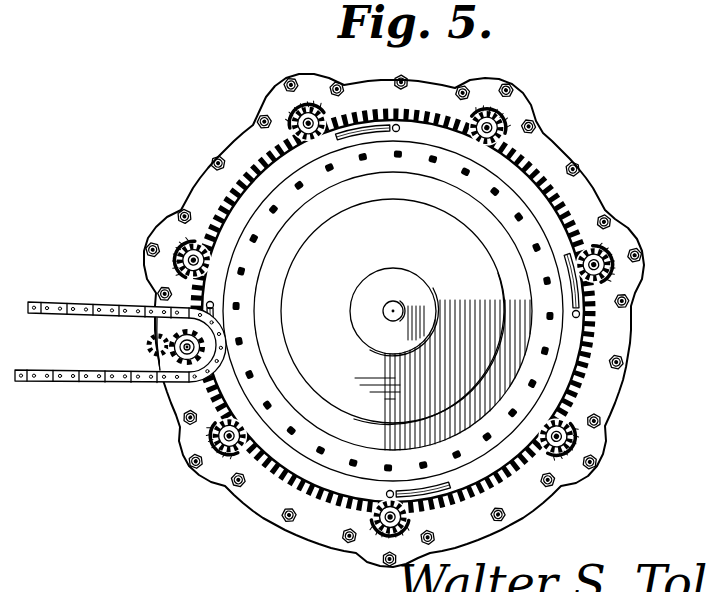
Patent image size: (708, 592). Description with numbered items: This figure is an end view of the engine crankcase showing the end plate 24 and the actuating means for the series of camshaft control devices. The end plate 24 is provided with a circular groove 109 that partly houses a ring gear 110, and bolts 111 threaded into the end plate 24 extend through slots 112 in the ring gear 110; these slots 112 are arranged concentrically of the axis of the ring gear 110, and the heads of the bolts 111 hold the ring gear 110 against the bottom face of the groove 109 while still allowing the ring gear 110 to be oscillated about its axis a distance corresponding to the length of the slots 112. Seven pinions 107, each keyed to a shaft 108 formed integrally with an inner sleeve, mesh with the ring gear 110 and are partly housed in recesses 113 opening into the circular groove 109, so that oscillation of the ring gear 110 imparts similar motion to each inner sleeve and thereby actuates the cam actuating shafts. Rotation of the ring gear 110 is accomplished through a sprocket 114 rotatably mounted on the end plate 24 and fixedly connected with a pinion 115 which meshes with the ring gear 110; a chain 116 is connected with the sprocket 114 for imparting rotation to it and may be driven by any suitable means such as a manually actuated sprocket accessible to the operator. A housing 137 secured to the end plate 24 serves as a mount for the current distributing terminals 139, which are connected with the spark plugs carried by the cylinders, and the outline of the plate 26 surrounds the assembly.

The end plate 24 is at (548, 145).
The ring casing 26 is at (284, 516).
The pinion 107 is at (310, 108).
The shaft 108 is at (293, 112).
The circular groove 109 is at (278, 180).
The ring gear 110 is at (258, 168).
The bolts 111 is at (398, 128).
The slots 112 is at (362, 132).
The recesses 113 is at (305, 108).
The sprocket 114 is at (162, 348).
The pinion 115 is at (162, 336).
The chain 116 is at (92, 378).
The housing 137 is at (530, 226).
The current distributing terminals 139 is at (496, 188).